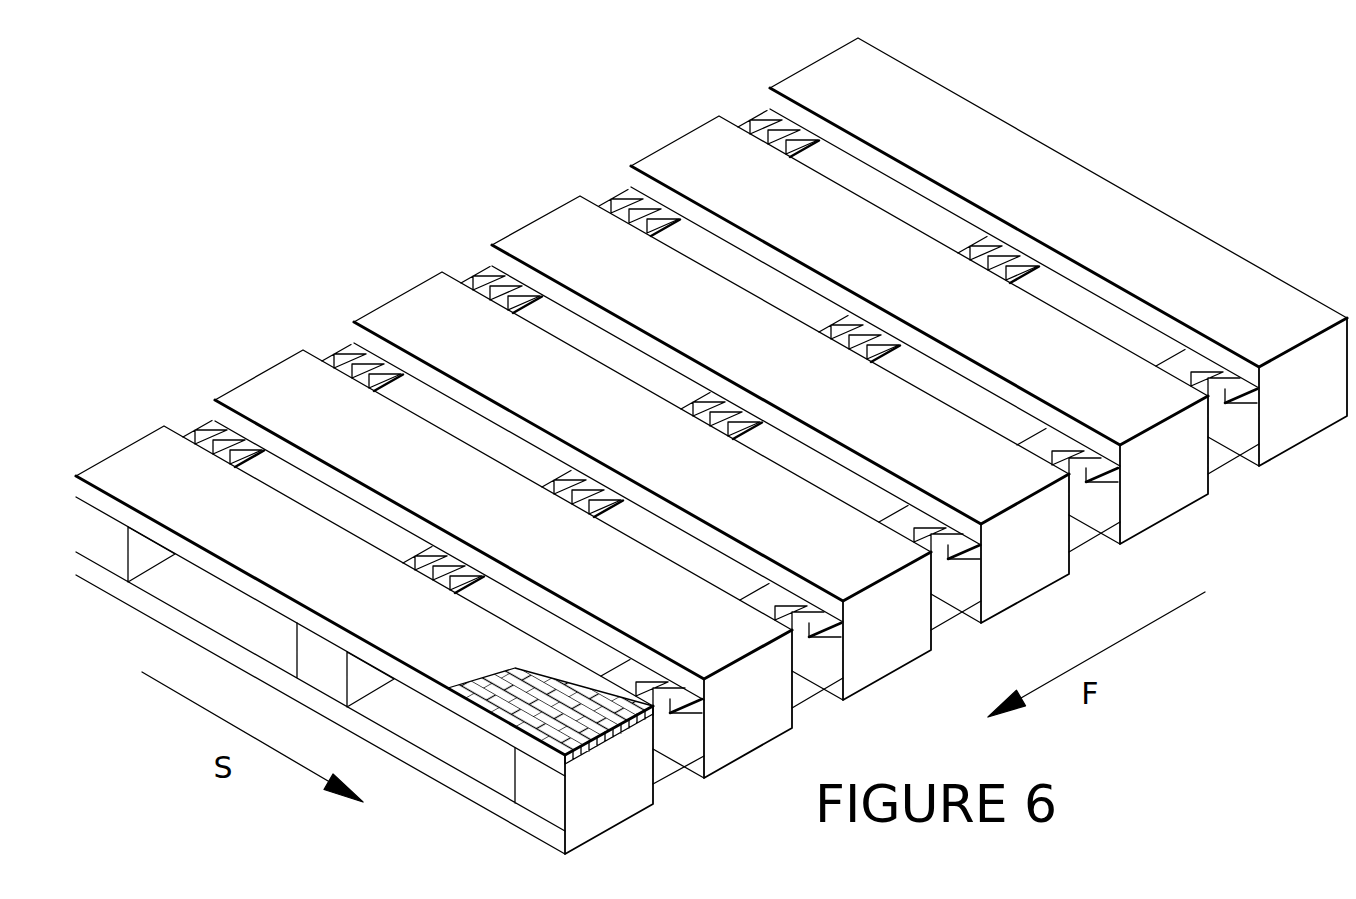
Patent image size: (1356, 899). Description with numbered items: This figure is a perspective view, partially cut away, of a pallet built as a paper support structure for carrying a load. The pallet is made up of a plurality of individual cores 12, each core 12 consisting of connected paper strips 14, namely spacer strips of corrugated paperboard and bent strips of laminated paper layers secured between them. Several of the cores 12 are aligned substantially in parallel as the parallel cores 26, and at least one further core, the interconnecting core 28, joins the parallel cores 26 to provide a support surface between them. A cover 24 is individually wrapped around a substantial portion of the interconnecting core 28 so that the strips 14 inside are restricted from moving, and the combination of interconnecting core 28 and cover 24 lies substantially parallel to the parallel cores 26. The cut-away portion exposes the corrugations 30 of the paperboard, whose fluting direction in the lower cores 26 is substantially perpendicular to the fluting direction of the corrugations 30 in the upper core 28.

The core 12 is at (728, 123).
The connected strips 14 is at (497, 300).
The cover 24 is at (447, 660).
The parallel cores 26 is at (118, 549).
The interconnecting core 28 is at (478, 712).
The corrugations 30 is at (587, 757).